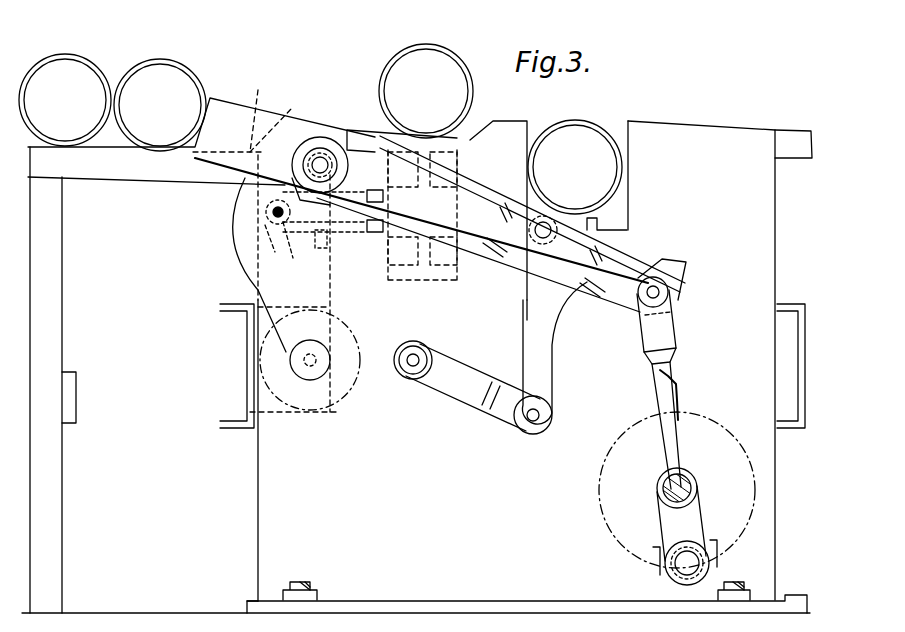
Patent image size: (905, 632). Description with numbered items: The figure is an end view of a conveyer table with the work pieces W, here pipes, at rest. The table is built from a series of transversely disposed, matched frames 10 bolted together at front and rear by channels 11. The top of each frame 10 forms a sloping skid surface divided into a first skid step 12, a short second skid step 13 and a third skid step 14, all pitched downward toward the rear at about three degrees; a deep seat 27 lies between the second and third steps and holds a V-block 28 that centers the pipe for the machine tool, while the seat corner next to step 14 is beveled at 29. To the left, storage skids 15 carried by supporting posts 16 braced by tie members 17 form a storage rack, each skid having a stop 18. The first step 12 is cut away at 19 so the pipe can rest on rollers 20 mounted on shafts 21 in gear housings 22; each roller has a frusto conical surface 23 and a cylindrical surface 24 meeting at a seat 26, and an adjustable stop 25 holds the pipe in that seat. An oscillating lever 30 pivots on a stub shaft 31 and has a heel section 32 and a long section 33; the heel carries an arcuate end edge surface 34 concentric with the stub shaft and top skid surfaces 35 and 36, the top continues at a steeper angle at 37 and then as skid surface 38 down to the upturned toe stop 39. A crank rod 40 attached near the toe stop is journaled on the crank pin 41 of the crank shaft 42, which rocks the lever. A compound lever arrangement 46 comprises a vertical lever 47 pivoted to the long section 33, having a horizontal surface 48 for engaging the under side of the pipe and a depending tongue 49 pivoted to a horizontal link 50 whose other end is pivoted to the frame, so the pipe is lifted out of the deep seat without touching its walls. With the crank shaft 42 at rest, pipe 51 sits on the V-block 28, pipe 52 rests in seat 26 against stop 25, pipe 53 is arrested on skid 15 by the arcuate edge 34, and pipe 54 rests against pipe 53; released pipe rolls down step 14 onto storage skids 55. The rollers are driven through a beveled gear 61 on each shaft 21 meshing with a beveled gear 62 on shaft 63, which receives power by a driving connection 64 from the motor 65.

The frame 10 is at (255, 458).
The channel 11 is at (238, 312).
The first skid step 12 is at (352, 140).
The second skid step 13 is at (502, 124).
The third skid step 14 is at (718, 127).
The storage skid 15 is at (112, 150).
The supporting post 16 is at (63, 313).
The tie member 17 is at (78, 382).
The stop 18 is at (237, 110).
The cut-away 19 is at (450, 153).
The roller 20 is at (378, 136).
The shaft 21 is at (367, 232).
The gear housing 22 is at (340, 238).
The frusto conical surface 23 is at (408, 136).
The cylindrical surface 24 is at (457, 282).
The stop 25 is at (455, 146).
The seat 26 is at (432, 136).
The deep seat 27 is at (624, 196).
The V-block 28 is at (600, 222).
The bevel 29 is at (628, 121).
The oscillating lever 30 is at (503, 275).
The stub shaft 31 is at (328, 165).
The heel section 32 is at (218, 108).
The long section 33 is at (421, 220).
The arcuate end edge surface 34 is at (193, 160).
The top skid surface 35 is at (236, 110).
The top skid surface 36 is at (266, 130).
The steeper surface 37 is at (368, 130).
The skid surface 38 is at (472, 180).
The toe stop 39 is at (686, 252).
The crank rod 40 is at (677, 372).
The crank pin 41 is at (705, 562).
The crank shaft 42 is at (690, 480).
The compound lever arrangement 46 is at (592, 369).
The vertical lever 47 is at (592, 329).
The horizontal surface 48 is at (560, 232).
The depending tongue 49 is at (553, 397).
The horizontal link 50 is at (468, 392).
The pipe 51 is at (580, 120).
The pipe 52 is at (440, 44).
The pipe 53 is at (190, 62).
The pipe 54 is at (82, 56).
The storage skid 55 is at (797, 130).
The beveled gear 61 is at (312, 254).
The beveled gear 62 is at (278, 250).
The shaft 63 is at (272, 212).
The driving connection 64 is at (250, 240).
The motor 65 is at (325, 404).
The work piece W is at (60, 54).